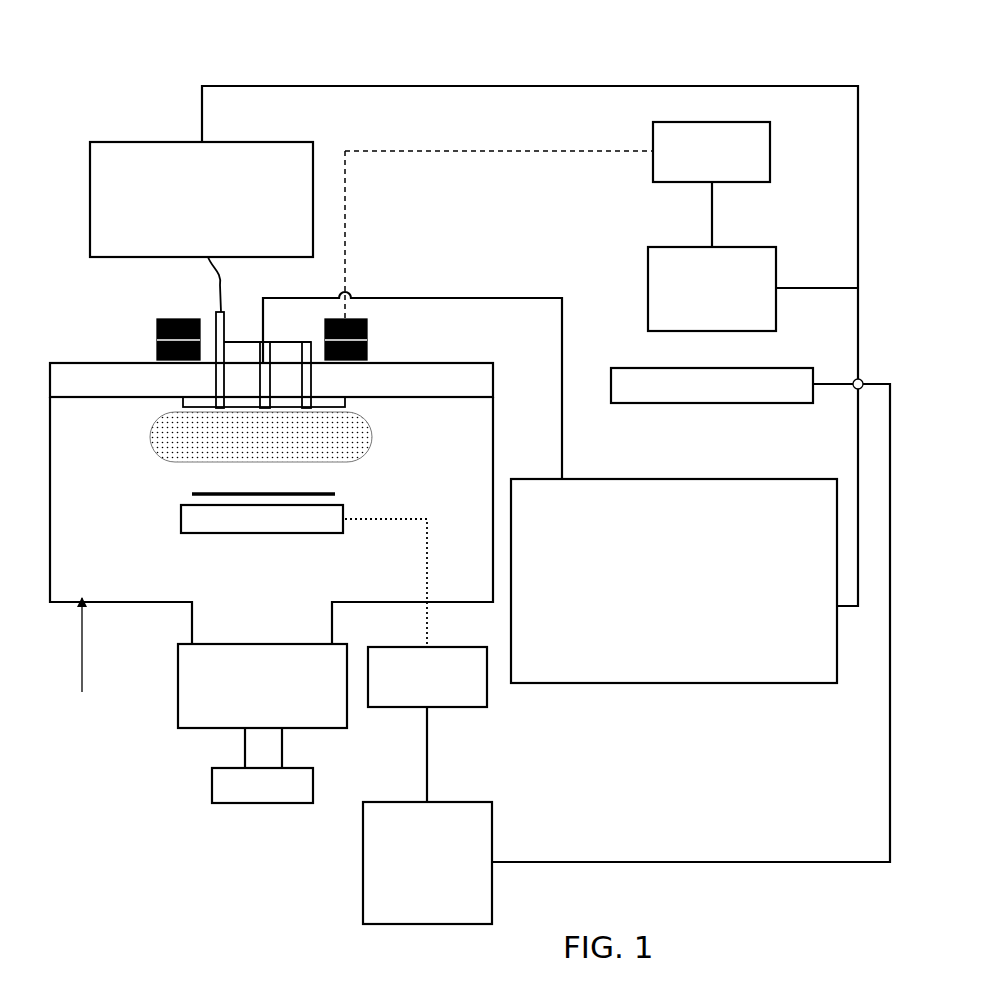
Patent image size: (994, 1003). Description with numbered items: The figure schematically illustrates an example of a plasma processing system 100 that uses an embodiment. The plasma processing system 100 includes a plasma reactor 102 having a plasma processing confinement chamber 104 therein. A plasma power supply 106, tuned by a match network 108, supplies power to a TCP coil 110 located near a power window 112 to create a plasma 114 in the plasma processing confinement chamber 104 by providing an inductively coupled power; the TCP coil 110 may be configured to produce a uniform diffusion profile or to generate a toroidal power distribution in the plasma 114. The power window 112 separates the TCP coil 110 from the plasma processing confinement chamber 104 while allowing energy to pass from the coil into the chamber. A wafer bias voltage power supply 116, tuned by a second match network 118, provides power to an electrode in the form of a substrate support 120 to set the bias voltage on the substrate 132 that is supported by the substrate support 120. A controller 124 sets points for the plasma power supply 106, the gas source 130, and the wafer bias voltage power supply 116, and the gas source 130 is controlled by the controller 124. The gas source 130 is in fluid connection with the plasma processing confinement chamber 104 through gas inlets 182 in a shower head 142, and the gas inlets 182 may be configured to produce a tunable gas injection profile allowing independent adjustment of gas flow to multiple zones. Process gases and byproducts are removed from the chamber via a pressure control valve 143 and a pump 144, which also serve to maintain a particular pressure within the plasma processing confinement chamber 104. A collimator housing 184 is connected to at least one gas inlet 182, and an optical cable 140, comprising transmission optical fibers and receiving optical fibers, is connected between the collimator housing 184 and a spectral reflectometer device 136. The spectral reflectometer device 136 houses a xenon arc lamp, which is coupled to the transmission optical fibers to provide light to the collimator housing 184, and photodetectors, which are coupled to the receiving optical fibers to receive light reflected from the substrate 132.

The plasma processing system 100 is at (444, 43).
The plasma reactor 102 is at (52, 602).
The plasma processing confinement chamber 104 is at (80, 660).
The plasma power supply 106 is at (648, 288).
The match network 108 is at (653, 167).
The TCP coil 110 is at (367, 326).
The power window 112 is at (83, 363).
The plasma 114 is at (261, 437).
The wafer bias voltage power supply 116 is at (363, 870).
The match network 118 is at (427, 647).
The substrate support 120 is at (262, 519).
The controller 124 is at (611, 381).
The gas source 130 is at (674, 581).
The substrate 132 is at (337, 494).
The spectral reflectometer device 136 is at (201, 199).
The optical cable 140 is at (216, 284).
The shower head 142 is at (205, 402).
The pressure control valve 143 is at (178, 685).
The pump 144 is at (212, 785).
The gas inlets 182 is at (312, 362).
The collimator housing 184 is at (216, 322).